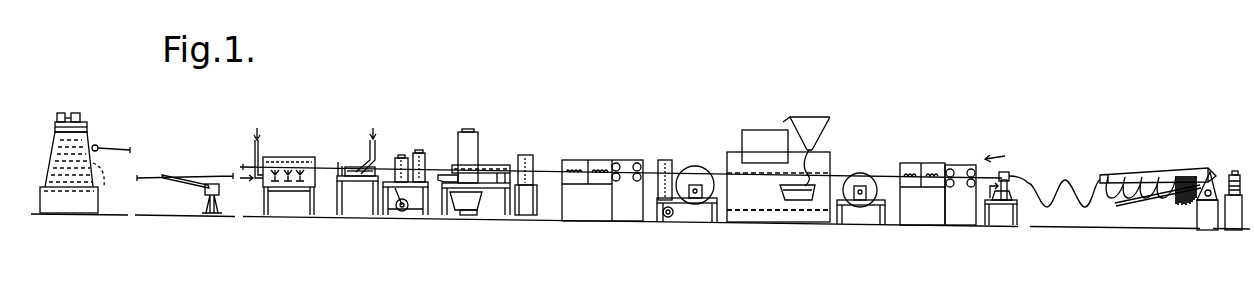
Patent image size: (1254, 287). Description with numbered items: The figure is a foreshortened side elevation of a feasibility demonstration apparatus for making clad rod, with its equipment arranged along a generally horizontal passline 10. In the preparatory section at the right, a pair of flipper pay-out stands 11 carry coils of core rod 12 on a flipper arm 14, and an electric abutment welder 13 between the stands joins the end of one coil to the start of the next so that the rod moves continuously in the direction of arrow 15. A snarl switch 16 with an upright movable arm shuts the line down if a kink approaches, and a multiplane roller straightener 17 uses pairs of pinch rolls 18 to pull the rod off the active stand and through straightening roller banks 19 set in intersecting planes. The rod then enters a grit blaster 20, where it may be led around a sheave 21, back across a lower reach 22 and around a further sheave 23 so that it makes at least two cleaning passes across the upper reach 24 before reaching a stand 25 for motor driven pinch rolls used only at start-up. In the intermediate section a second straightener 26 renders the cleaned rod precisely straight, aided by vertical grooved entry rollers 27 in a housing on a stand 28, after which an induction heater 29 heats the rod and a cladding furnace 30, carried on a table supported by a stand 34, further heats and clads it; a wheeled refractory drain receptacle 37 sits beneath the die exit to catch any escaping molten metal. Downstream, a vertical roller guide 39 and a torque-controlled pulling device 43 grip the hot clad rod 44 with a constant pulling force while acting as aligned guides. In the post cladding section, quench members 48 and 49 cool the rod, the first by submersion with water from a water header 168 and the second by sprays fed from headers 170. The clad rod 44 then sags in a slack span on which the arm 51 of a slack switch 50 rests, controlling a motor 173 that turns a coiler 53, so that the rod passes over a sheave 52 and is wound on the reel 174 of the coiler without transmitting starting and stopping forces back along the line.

The passline 10 is at (548, 170).
The flipper pay-out stand 11 is at (1203, 218).
The core rod 12 is at (1184, 205).
The electric abutment welder 13 is at (1233, 216).
The flipper arm 14 is at (1118, 177).
The arrow 15 is at (997, 150).
The snarl switch 16 is at (1000, 212).
The multiplane roller straightener 17 is at (916, 205).
The pinch rolls 18 is at (970, 167).
The straightening roller banks 19 is at (920, 152).
The grit blaster 20 is at (748, 197).
The sheave 21 is at (695, 205).
The lower reach 22 is at (785, 212).
The further sheave 23 is at (860, 205).
The upper reach 24 is at (740, 172).
The stand for motor driven pinch rolls 25 is at (670, 160).
The second straightener 26 is at (586, 195).
The vertical grooved entry rollers 27 is at (532, 158).
The stand 28 is at (526, 205).
The induction heater 29 is at (490, 165).
The cladding furnace 30 is at (462, 133).
The stand 34 is at (437, 205).
The refractory drain receptacle 37 is at (465, 205).
The vertical roller guide 39 is at (420, 153).
The torque-controlled pulling device 43 is at (400, 158).
The clad rod 44 is at (117, 150).
The quench member 48 is at (358, 182).
The quench member 49 is at (280, 157).
The slack switch 50 is at (219, 188).
The arm 51 is at (170, 177).
The sheave 52 is at (95, 145).
The coiler 53 is at (68, 195).
The water header 168 is at (368, 150).
The header 170 is at (253, 165).
The motor 173 is at (63, 114).
The reel 174 is at (115, 182).